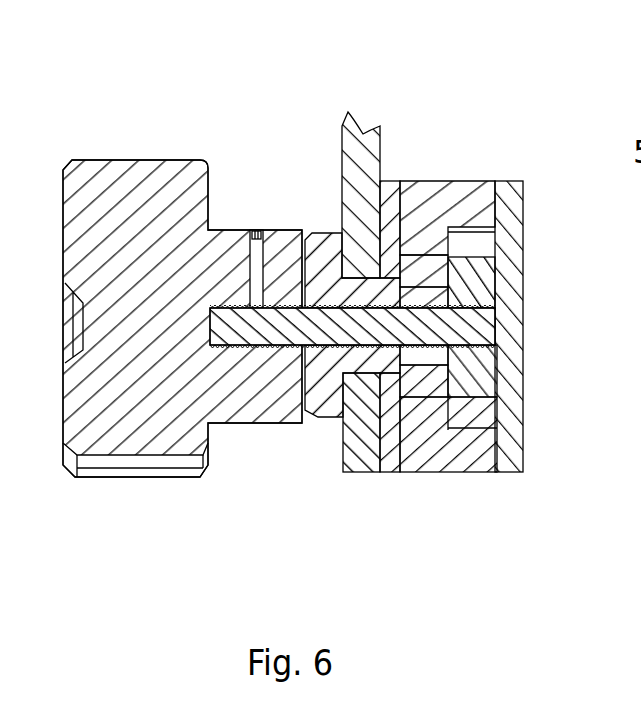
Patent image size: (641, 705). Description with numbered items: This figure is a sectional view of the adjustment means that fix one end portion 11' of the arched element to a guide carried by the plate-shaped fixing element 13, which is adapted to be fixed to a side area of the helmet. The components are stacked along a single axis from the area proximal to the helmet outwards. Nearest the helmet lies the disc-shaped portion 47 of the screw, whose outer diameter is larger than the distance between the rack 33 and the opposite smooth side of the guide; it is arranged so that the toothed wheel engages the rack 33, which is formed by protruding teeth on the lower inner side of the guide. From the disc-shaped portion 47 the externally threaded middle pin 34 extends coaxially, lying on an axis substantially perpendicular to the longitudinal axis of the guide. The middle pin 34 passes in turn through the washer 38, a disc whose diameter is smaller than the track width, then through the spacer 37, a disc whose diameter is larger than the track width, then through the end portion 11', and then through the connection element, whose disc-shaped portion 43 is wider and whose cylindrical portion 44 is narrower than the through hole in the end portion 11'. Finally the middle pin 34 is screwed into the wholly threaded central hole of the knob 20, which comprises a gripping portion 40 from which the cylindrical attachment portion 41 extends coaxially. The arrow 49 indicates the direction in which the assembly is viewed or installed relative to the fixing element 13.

The knob 20 is at (120, 130).
The gripping portion 40 is at (102, 212).
The attachment portion 41 is at (225, 260).
The disc-shaped portion 43 is at (323, 260).
The end portion 11' is at (369, 154).
The fixing element 13 is at (453, 157).
The disc-shaped portion 47 is at (508, 212).
The insertion direction 49 is at (547, 157).
The middle pin 34 is at (285, 330).
The cylindrical portion 44 is at (372, 362).
The spacer 37 is at (393, 453).
The washer 38 is at (422, 382).
The rack 33 is at (475, 408).